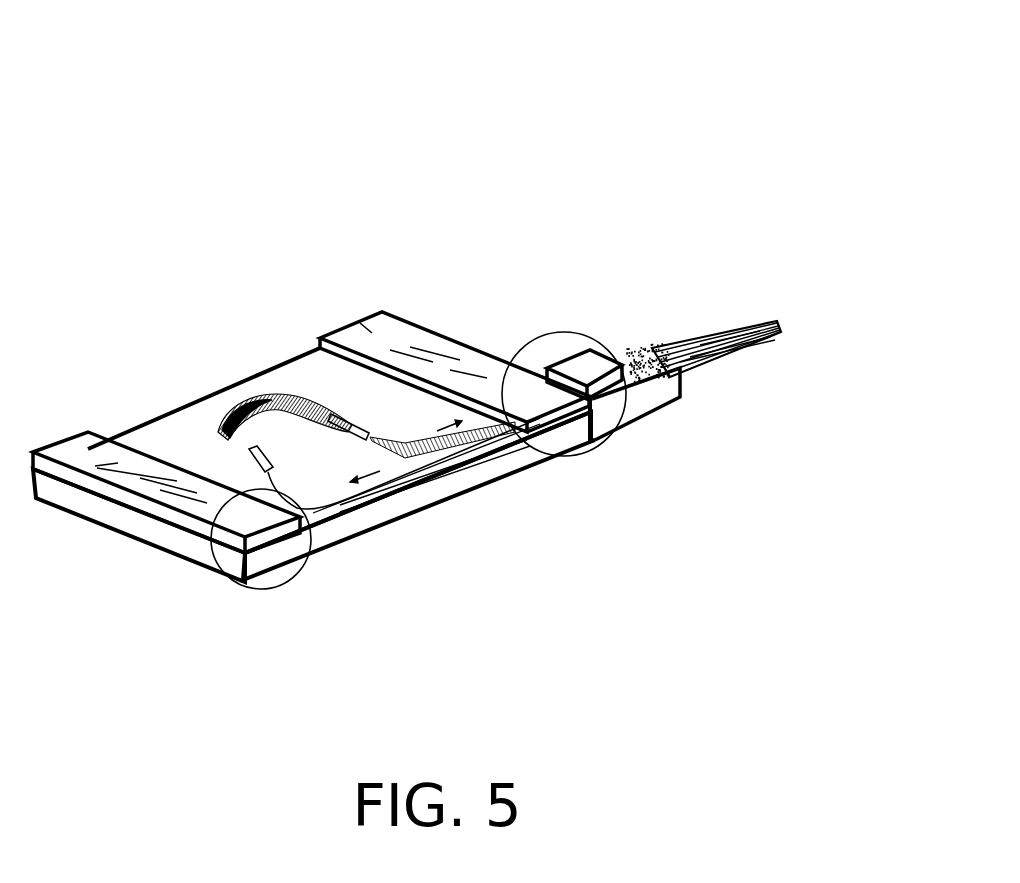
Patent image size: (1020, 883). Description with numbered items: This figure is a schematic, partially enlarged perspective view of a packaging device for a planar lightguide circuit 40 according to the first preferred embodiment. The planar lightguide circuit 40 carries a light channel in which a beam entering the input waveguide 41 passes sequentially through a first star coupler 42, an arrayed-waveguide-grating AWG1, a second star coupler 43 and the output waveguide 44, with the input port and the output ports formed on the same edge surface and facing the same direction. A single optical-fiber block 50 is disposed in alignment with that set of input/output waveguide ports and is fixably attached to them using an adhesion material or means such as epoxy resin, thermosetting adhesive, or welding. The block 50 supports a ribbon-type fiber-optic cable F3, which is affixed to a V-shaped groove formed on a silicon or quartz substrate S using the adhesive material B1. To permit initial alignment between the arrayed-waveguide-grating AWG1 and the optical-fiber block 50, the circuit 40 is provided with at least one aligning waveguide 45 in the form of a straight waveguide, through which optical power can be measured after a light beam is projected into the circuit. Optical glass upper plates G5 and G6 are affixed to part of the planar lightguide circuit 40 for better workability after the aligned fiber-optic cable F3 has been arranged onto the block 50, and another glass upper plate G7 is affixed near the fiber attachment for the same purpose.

The planar lightguide circuit 40 is at (242, 282).
The input waveguide 41 is at (393, 483).
The first star coupler 42 is at (245, 457).
The second star coupler 43 is at (348, 412).
The output waveguide 44 is at (508, 448).
The aligning waveguide 45 is at (367, 497).
The substrate S is at (433, 492).
The glass upper plate G5 is at (86, 452).
The glass upper plate G6 is at (370, 335).
The glass upper plate G7 is at (578, 370).
The arrayed-waveguide-grating AWG1 is at (232, 410).
The adhesive material B1 is at (642, 348).
The ribbon-type fiber-optic cable F3 is at (722, 323).
The single optical-fiber block 50 is at (660, 385).